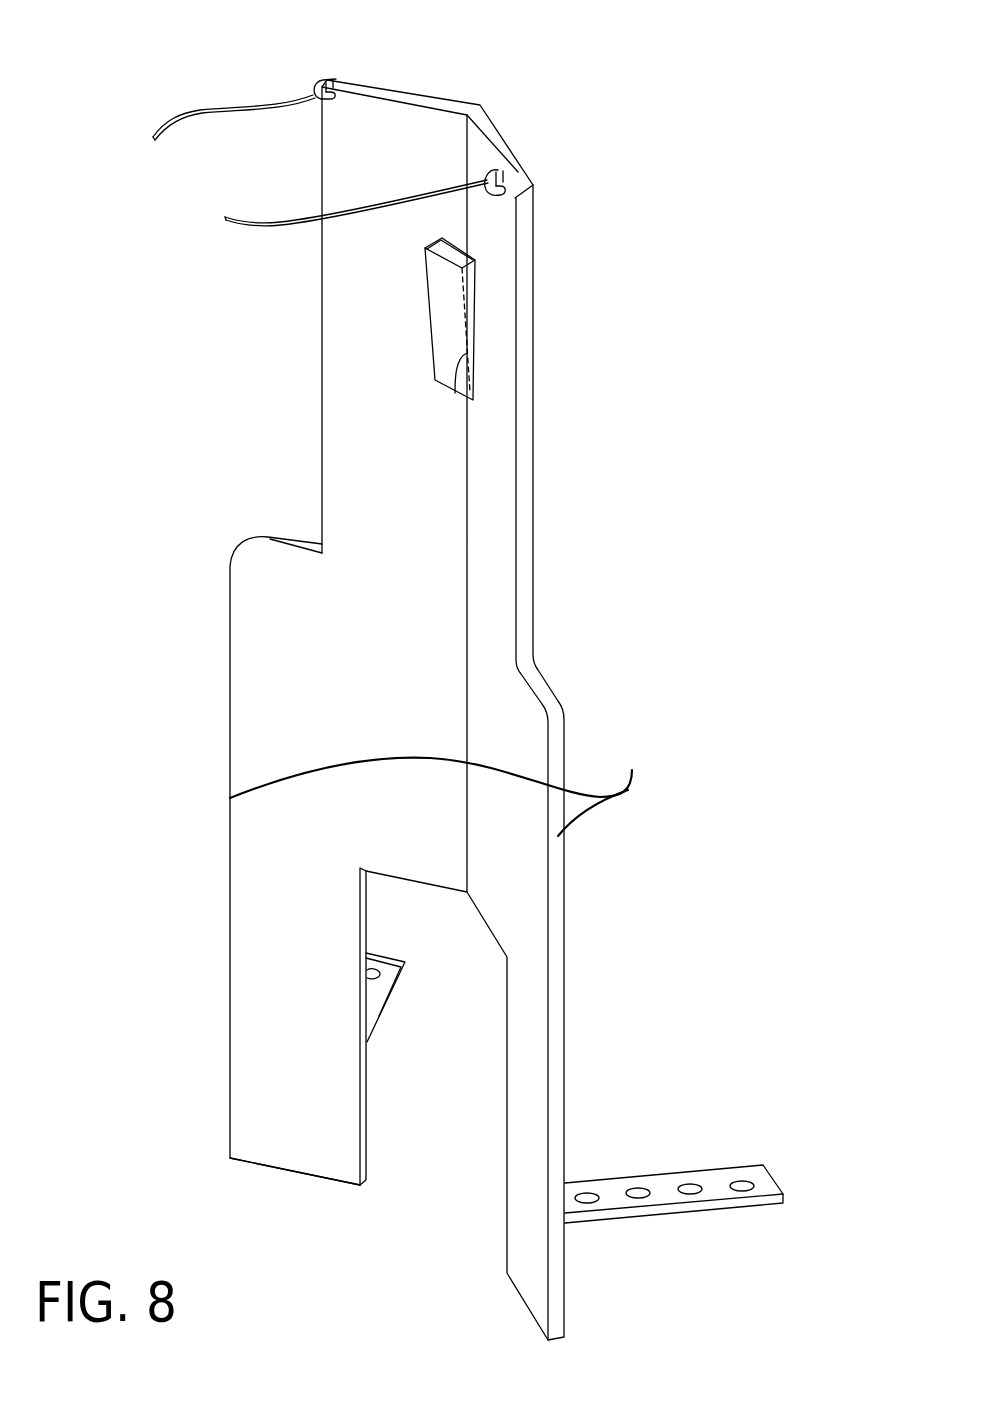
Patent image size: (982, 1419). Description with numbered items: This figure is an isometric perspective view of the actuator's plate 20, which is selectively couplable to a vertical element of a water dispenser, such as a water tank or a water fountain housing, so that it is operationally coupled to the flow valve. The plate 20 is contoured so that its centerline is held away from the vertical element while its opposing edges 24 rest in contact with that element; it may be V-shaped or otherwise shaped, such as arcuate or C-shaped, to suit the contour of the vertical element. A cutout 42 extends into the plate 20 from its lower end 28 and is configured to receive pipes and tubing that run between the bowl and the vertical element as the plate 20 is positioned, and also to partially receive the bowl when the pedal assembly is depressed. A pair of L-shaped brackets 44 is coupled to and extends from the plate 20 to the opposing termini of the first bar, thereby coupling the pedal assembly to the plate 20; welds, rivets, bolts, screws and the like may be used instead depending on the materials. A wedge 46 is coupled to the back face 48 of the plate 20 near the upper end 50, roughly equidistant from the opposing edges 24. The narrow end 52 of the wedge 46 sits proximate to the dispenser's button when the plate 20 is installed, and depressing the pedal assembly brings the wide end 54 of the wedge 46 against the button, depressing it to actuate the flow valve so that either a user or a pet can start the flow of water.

The plate 20 is at (490, 488).
The opposing edges 24 is at (442, 780).
The lower end 28 is at (313, 1175).
The cutout 42 is at (447, 1040).
The brackets 44 is at (380, 1015).
The wedge 46 is at (447, 292).
The back face 48 is at (416, 519).
The upper end 50 is at (434, 101).
The narrow end 52 is at (467, 357).
The wide end 54 is at (457, 252).